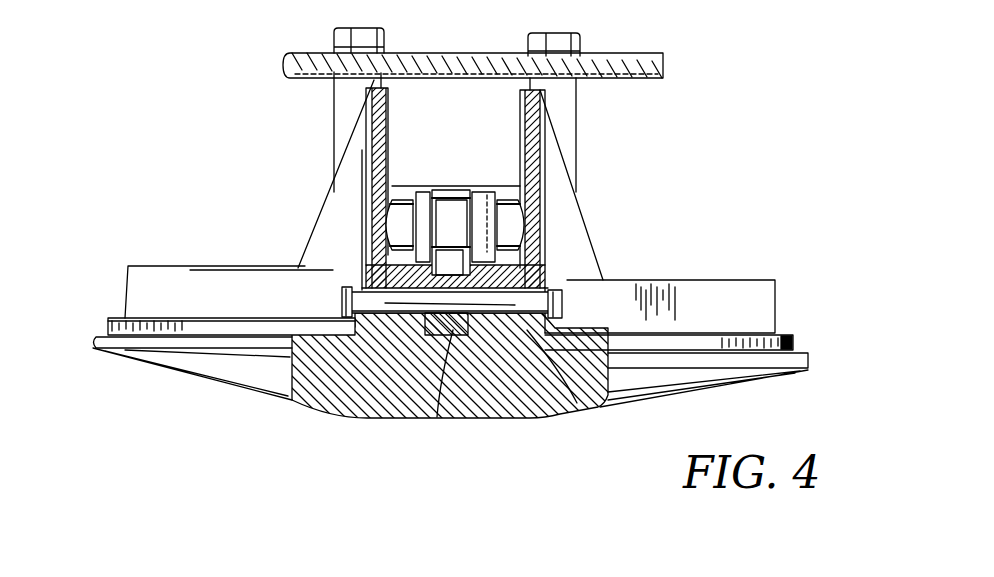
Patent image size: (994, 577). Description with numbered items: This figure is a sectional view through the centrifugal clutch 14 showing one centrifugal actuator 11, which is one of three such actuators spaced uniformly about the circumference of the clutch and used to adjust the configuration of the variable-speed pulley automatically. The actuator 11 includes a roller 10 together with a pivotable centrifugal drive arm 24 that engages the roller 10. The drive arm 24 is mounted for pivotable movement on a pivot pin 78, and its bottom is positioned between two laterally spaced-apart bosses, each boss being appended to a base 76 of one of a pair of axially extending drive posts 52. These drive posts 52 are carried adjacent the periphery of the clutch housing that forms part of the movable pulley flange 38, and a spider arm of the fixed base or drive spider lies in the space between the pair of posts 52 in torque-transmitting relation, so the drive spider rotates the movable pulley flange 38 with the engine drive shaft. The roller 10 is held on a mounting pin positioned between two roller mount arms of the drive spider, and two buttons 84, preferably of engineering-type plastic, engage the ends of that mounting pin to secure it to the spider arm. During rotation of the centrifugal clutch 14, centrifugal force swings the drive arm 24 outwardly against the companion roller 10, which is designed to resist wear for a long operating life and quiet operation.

The roller 10 is at (448, 218).
The centrifugal actuator 11 is at (553, 263).
The centrifugal clutch 14 is at (185, 225).
The centrifugal drive arm 24 is at (437, 417).
The movable pulley flange 38 is at (232, 383).
The drive post 52 is at (555, 173).
The base 76 is at (327, 253).
The pivot pin 78 is at (577, 403).
The button 84 is at (398, 217).